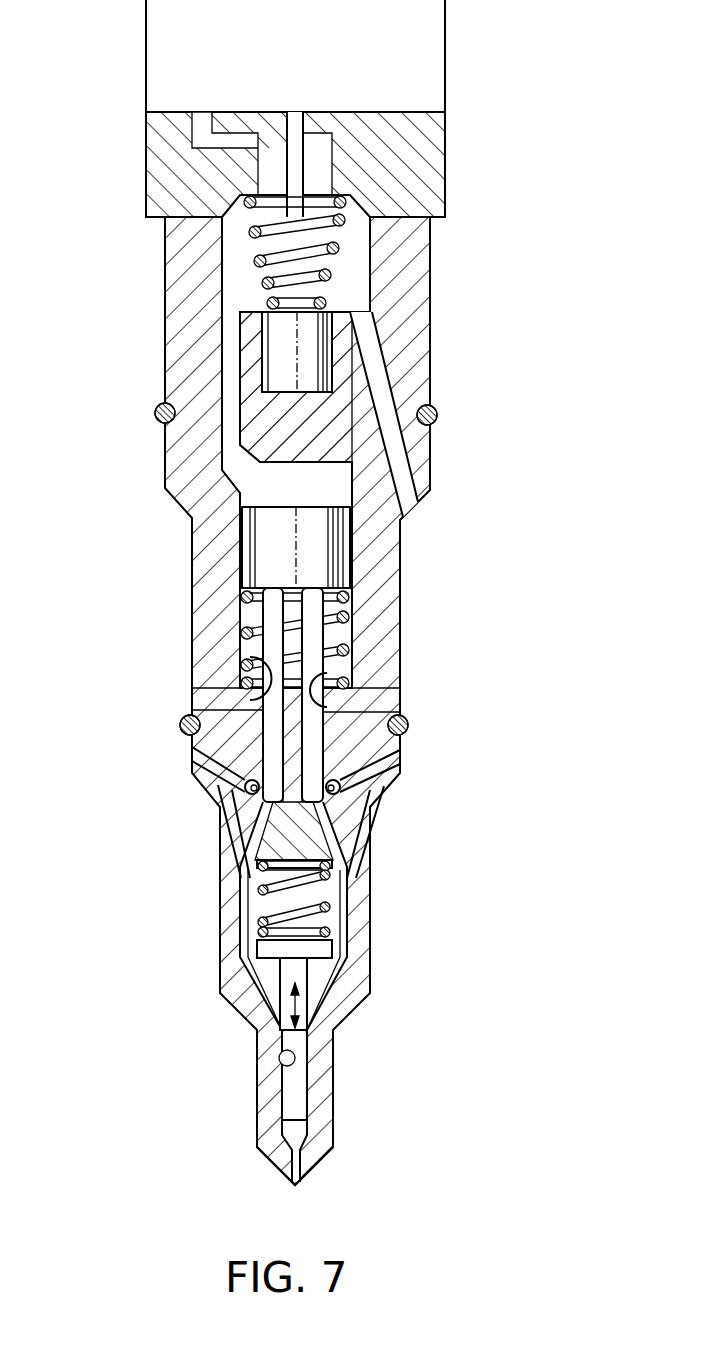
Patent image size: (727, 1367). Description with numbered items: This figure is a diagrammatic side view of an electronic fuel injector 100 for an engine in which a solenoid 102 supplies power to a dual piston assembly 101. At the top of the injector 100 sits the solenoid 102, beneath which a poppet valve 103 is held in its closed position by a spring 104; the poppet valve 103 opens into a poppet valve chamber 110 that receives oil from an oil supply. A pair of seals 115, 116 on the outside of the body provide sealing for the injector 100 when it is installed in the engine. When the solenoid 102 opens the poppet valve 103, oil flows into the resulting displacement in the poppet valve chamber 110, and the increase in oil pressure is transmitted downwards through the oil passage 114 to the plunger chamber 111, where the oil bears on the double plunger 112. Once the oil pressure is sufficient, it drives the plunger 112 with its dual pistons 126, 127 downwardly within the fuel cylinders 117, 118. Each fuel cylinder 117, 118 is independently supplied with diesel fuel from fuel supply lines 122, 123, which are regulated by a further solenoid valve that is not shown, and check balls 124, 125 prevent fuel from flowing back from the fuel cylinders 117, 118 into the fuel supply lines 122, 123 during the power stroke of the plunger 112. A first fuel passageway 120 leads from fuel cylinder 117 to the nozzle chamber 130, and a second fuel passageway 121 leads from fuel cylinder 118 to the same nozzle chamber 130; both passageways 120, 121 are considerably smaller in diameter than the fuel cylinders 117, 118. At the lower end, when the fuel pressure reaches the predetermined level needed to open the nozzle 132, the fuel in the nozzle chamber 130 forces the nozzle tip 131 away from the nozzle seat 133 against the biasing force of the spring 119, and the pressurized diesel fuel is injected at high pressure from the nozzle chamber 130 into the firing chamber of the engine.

The electronic fuel injector 100 is at (525, 405).
The dual piston assembly 101 is at (338, 700).
The solenoid 102 is at (430, 32).
The poppet valve 103 is at (273, 325).
The spring 104 is at (253, 233).
The poppet valve chamber 110 is at (373, 363).
The plunger chamber 111 is at (290, 483).
The double plunger 112 is at (252, 535).
The oil passage 114 is at (235, 335).
The seal 115 is at (155, 412).
The seal 116 is at (180, 725).
The fuel cylinder 117 is at (245, 633).
The fuel cylinder 118 is at (335, 665).
The spring 119 is at (258, 913).
The first fuel passageway 120 is at (238, 882).
The second fuel passageway 121 is at (348, 892).
The fuel supply line 122 is at (200, 753).
The fuel supply line 123 is at (385, 760).
The check ball 124 is at (246, 793).
The check ball 125 is at (355, 797).
The piston 126 is at (270, 665).
The piston 127 is at (315, 725).
The nozzle chamber 130 is at (281, 1052).
The nozzle tip 131 is at (297, 1127).
The nozzle 132 is at (292, 968).
The nozzle seat 133 is at (258, 1137).